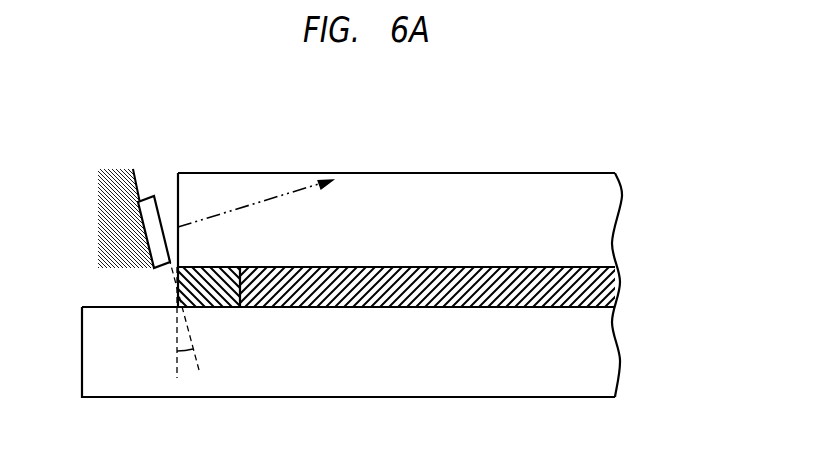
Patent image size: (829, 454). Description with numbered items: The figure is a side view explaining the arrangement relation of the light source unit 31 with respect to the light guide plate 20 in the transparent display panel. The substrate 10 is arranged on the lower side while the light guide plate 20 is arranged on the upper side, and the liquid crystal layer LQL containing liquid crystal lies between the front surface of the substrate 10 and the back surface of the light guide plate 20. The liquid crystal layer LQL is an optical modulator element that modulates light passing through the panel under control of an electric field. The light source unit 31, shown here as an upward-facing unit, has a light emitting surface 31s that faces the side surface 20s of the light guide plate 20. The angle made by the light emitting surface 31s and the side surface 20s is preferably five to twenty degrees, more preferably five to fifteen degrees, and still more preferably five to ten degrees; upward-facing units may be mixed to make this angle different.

The substrate 10 is at (610, 356).
The light guide plate 20 is at (610, 222).
The side surface of the light guide plate 20s is at (178, 214).
The liquid crystal layer LQL is at (612, 284).
The light source unit 31 is at (151, 199).
The light emitting surface 31s is at (161, 201).